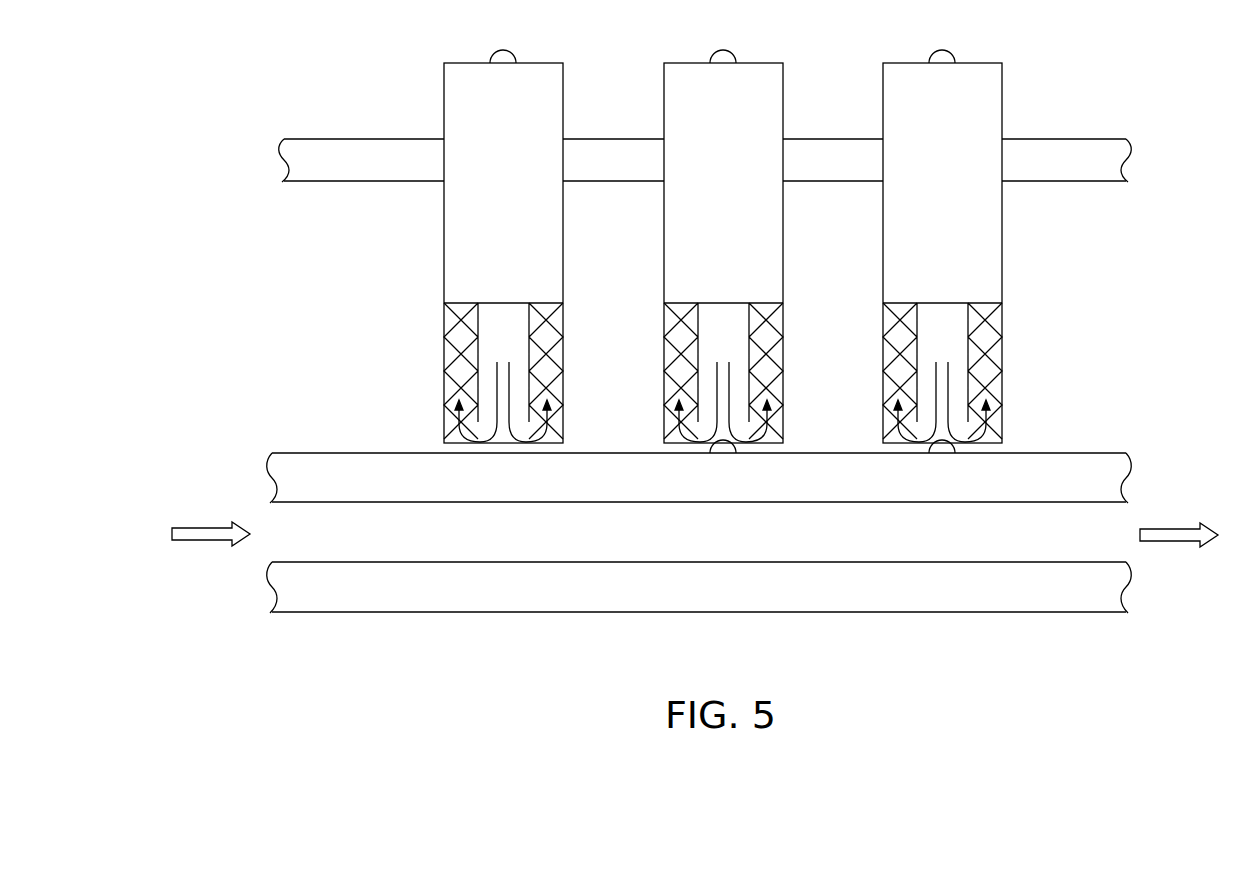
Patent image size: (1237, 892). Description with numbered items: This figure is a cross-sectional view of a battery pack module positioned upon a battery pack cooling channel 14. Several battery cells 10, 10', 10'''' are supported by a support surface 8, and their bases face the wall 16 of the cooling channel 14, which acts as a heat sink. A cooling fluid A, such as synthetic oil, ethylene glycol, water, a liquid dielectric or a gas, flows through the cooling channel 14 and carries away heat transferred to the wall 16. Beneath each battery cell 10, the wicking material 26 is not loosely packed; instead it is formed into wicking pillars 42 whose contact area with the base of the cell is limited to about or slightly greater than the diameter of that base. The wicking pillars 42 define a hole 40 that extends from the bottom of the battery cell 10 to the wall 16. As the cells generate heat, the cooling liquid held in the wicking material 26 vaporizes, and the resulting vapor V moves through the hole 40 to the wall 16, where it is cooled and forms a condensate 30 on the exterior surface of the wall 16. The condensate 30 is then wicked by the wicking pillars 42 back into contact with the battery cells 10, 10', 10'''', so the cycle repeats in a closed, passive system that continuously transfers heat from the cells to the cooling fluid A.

The support surface 8 is at (1068, 138).
The battery cell 10 is at (503, 246).
The battery cell 10' is at (723, 246).
The battery cell 10'''' is at (942, 246).
The battery pack cooling channel 14 is at (298, 641).
The wall 16 is at (1103, 478).
The wicking material 26 is at (547, 320).
The condensate 30 is at (722, 456).
The hole 40 is at (491, 340).
The wicking pillar 42 is at (448, 385).
The vapor V is at (550, 412).
The cooling fluid A is at (699, 526).